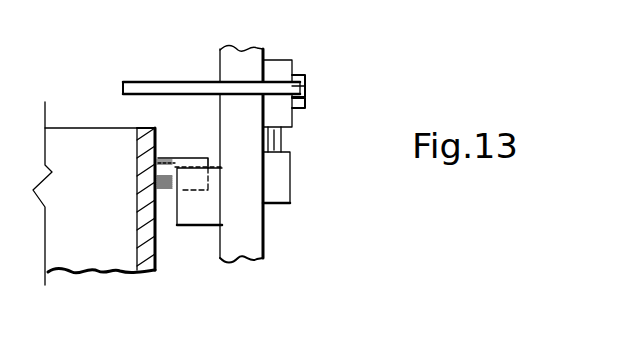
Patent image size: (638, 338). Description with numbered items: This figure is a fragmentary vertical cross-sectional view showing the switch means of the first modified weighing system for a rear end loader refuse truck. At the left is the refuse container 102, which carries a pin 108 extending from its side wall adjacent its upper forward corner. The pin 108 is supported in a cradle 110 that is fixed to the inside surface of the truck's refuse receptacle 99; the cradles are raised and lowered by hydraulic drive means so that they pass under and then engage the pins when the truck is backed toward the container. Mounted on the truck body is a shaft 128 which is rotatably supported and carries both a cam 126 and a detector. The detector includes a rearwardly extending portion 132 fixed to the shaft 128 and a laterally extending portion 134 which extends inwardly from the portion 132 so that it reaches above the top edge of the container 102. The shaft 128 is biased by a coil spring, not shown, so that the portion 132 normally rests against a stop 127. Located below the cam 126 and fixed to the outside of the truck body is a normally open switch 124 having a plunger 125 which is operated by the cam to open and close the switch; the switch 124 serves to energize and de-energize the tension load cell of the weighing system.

The refuse container 102 is at (74, 100).
The laterally extending portion 134 is at (163, 85).
The pin 108 is at (180, 157).
The cradle 110 is at (190, 208).
The cam 126 is at (280, 68).
The shaft 128 is at (302, 77).
The rearwardly extending portion 132 is at (305, 82).
The stop 127 is at (307, 100).
The plunger 125 is at (282, 142).
The normally open switch 124 is at (273, 190).
The refuse receptacle 99 is at (257, 242).